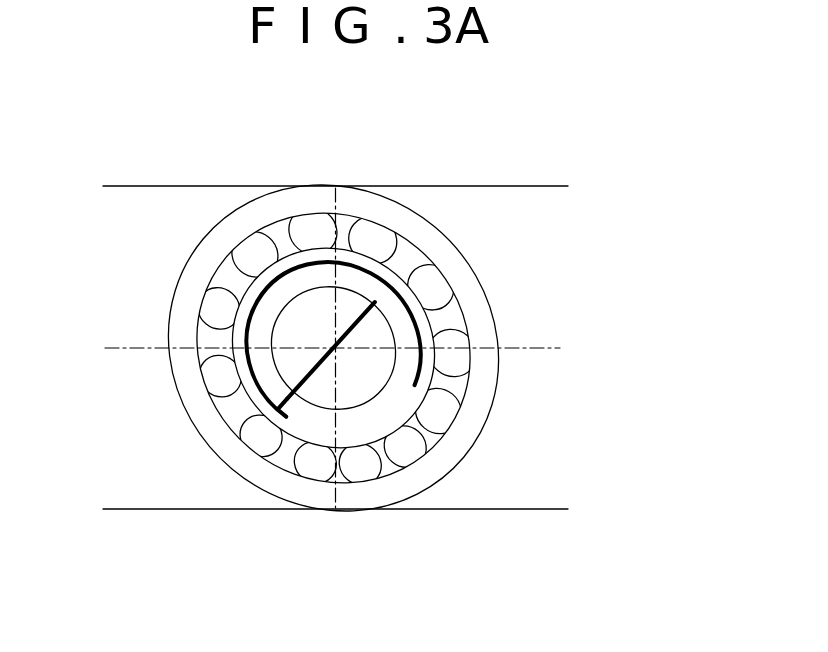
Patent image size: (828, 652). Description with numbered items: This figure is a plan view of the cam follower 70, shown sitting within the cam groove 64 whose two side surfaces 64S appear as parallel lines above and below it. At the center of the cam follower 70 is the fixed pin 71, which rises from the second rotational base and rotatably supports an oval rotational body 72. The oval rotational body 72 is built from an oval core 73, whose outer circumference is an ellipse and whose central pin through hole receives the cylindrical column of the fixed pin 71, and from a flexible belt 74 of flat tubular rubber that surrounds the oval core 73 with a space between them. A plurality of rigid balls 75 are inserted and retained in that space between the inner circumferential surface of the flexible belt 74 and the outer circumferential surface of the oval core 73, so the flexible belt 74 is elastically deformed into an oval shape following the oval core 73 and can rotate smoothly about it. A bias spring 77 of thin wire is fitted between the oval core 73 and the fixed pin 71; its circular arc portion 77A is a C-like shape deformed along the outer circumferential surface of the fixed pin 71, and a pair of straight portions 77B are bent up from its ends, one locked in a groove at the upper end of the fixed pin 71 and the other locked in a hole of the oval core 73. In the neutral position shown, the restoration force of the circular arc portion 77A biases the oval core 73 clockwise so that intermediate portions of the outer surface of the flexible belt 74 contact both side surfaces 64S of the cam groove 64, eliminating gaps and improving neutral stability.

The cam follower 70 is at (633, 252).
The oval rotational body 72 is at (485, 121).
The oval core 73 is at (280, 270).
The flexible belt 74 is at (448, 272).
The rigid balls 75 is at (383, 247).
The fixed pin 71 is at (365, 388).
The bias spring 77 is at (257, 297).
The circular arc portion 77A is at (243, 357).
The straight portions 77B is at (309, 380).
The cam groove 64 is at (335, 346).
The side surfaces 64S is at (155, 187).